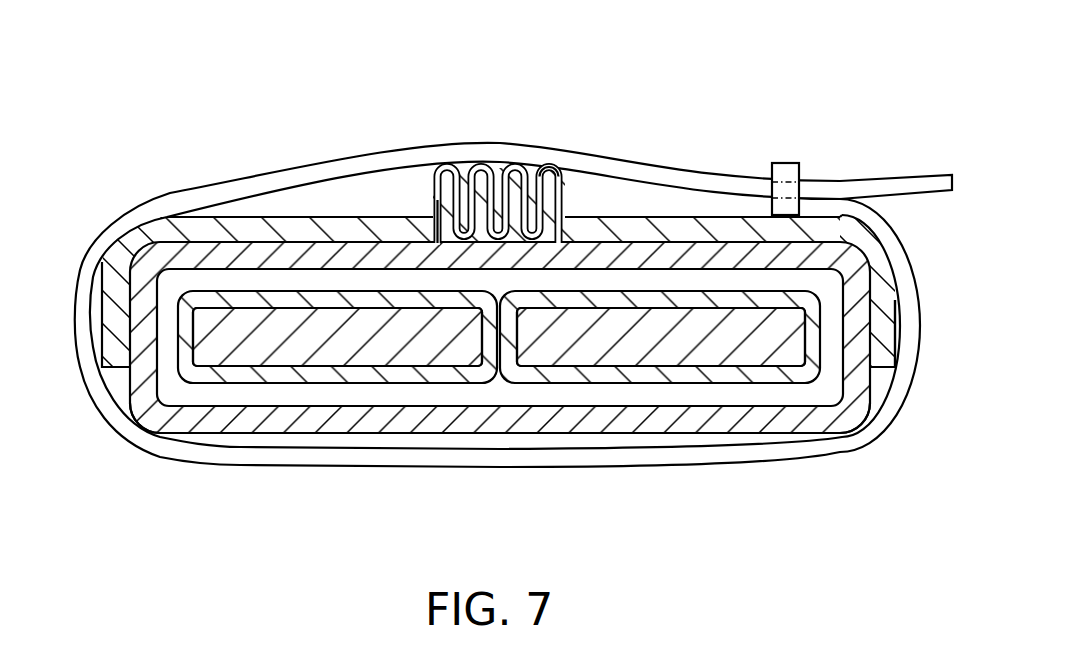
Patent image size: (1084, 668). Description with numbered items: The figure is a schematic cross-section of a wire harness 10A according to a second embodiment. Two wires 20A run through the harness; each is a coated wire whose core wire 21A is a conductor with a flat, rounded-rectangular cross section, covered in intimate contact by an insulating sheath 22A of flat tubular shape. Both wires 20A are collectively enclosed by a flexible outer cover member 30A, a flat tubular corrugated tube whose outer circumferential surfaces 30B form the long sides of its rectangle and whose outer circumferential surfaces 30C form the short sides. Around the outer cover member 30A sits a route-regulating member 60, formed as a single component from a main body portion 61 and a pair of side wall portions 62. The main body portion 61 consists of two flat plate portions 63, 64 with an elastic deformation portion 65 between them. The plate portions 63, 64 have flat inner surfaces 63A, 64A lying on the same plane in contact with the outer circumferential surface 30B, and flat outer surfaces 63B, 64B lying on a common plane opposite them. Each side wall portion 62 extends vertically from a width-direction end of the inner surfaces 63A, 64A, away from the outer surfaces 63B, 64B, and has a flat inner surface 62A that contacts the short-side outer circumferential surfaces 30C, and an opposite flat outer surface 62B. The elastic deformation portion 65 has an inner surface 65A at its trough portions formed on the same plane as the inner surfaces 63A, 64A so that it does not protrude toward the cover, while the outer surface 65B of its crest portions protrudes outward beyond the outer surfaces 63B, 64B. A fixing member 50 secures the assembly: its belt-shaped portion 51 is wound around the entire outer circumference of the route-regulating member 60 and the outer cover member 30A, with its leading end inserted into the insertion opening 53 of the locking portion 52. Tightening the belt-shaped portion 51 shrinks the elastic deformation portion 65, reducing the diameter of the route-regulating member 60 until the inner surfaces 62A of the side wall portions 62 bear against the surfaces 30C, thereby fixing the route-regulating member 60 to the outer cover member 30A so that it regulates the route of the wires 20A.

The wire harness 10A is at (504, 298).
The wire 20A is at (499, 427).
The core wire 21A is at (612, 356).
The insulating sheath 22A is at (700, 375).
The outer cover member 30A is at (467, 422).
The outer circumferential surface 30B is at (295, 250).
The outer circumferential surface 30C is at (135, 352).
The fixing member 50 is at (860, 137).
The belt-shaped portion 51 is at (868, 185).
The locking portion 52 is at (786, 163).
The insertion opening 53 is at (809, 151).
The route-regulating member 60 is at (880, 228).
The main body portion 61 is at (498, 201).
The side wall portion 62 is at (115, 280).
The inner surface 62A is at (112, 368).
The outer surface 62B is at (900, 308).
The plate portion 63 is at (586, 218).
The inner surface 63A is at (710, 246).
The outer surface 63B is at (628, 216).
The plate portion 64 is at (367, 220).
The inner surface 64A is at (193, 240).
The outer surface 64B is at (243, 216).
The elastic deformation portion 65 is at (510, 170).
The inner surface 65A is at (442, 212).
The outer surface 65B is at (552, 170).